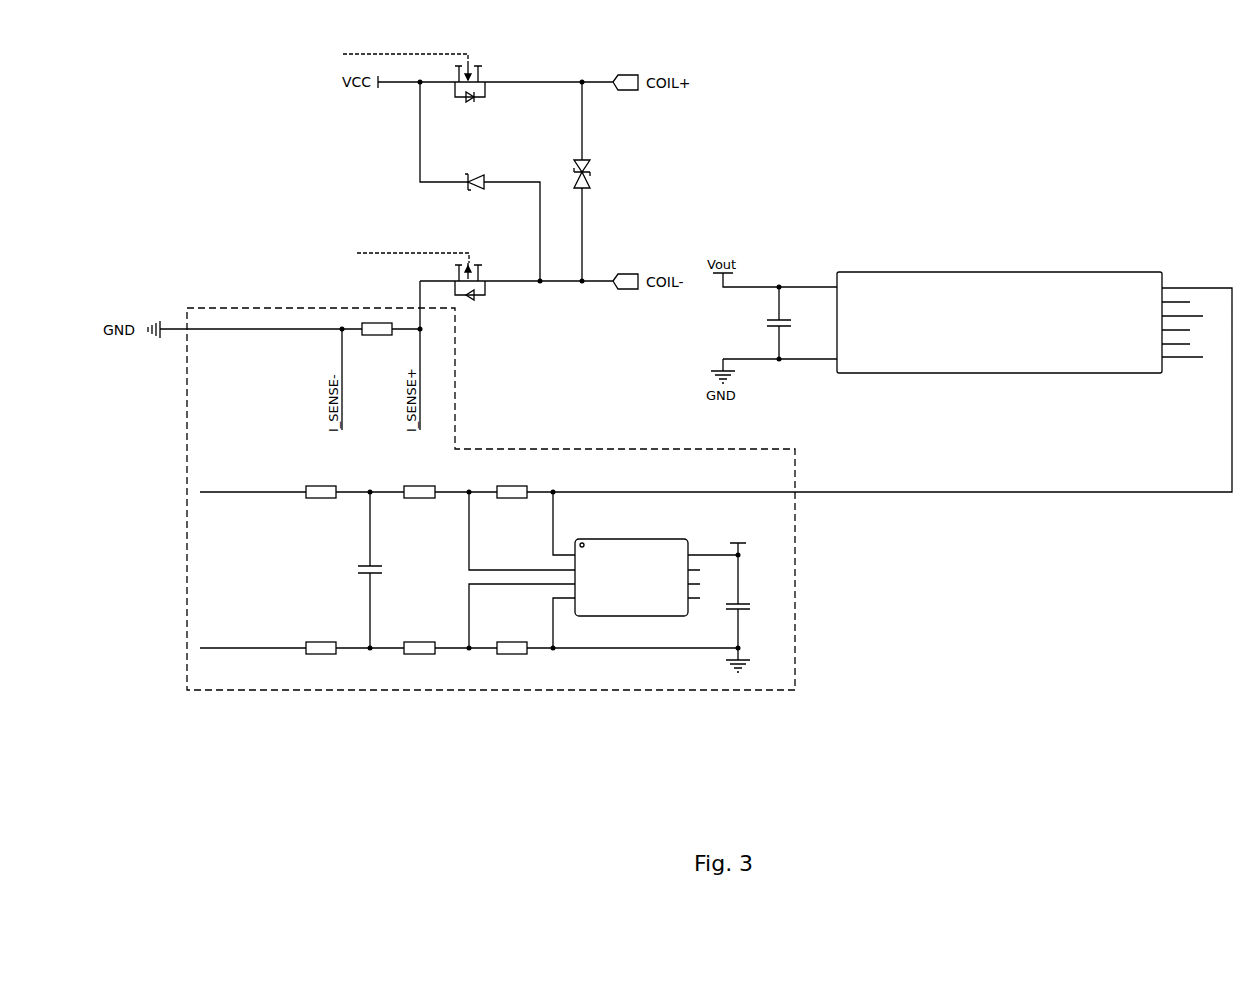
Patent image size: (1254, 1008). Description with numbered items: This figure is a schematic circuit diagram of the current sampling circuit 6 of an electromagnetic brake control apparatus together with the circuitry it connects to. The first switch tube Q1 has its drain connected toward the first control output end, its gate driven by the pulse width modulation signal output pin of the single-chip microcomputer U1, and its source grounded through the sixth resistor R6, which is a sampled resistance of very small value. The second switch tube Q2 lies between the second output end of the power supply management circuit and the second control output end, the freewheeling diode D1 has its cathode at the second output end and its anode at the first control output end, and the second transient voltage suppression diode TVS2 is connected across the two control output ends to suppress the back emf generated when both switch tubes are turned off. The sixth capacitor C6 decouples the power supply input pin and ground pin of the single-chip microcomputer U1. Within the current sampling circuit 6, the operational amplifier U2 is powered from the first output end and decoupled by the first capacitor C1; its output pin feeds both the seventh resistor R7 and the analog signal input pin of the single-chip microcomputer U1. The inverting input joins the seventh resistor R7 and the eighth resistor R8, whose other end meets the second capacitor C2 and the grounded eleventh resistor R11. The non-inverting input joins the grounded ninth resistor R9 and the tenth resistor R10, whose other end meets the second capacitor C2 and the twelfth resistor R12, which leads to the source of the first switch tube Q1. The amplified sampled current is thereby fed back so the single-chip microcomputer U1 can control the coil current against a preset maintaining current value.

The current sampling circuit 6 is at (529, 499).
The first switch tube Q1 is at (480, 270).
The second switch tube Q2 is at (480, 77).
The freewheeling diode D1 is at (477, 169).
The second transient voltage suppression diode TVS2 is at (602, 174).
The sixth resistor R6 is at (377, 340).
The single-chip microcomputer U1 is at (892, 370).
The sixth capacitor C6 is at (789, 323).
The seventh resistor R7 is at (512, 479).
The eighth resistor R8 is at (419, 479).
The ninth resistor R9 is at (512, 635).
The tenth resistor R10 is at (420, 635).
The eleventh resistor R11 is at (323, 479).
The twelfth resistor R12 is at (323, 635).
The second capacitor C2 is at (380, 570).
The first capacitor C1 is at (748, 606).
The operational amplifier U2 is at (649, 567).